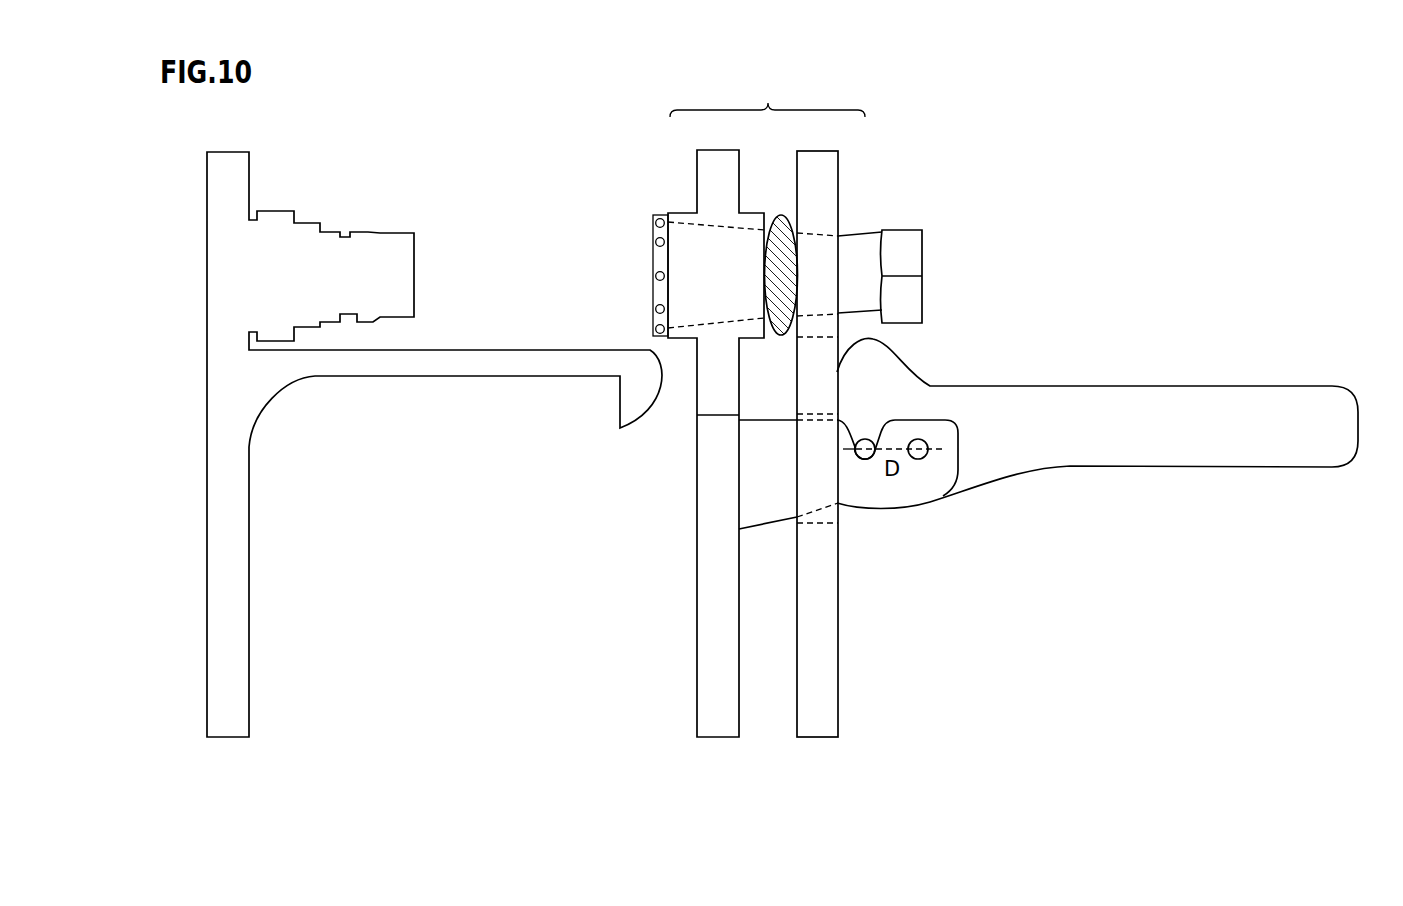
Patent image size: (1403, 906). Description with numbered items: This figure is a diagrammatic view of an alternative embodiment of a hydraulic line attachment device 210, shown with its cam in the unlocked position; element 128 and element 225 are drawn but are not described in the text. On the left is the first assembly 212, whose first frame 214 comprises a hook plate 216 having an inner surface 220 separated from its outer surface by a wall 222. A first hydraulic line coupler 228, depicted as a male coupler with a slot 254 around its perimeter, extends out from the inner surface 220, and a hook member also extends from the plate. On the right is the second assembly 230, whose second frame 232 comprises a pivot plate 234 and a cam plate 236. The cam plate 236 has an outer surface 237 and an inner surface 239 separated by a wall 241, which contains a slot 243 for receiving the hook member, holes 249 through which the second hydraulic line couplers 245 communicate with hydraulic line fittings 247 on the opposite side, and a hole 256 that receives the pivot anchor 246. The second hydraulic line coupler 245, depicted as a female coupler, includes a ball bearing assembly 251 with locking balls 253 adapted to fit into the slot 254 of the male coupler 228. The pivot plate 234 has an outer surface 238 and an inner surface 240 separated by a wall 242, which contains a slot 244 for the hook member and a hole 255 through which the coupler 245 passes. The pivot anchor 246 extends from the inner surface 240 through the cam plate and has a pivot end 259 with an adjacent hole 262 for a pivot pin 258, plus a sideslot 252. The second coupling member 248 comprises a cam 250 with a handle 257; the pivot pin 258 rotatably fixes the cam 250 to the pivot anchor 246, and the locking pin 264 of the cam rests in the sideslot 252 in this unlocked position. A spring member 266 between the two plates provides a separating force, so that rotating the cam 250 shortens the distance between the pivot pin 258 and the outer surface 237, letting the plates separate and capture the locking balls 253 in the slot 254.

The frame member 128 is at (208, 173).
The hydraulic line attachment device 210 is at (585, 182).
The first assembly 212 is at (297, 703).
The first frame 214 is at (230, 721).
The hook plate 216 is at (235, 641).
The inner surface 220 is at (249, 577).
The wall 222 is at (235, 150).
The flange 225 is at (552, 355).
The first hydraulic line couplers 228 is at (378, 240).
The second assembly 230 is at (930, 693).
The second frame 232 is at (767, 95).
The pivot plate 234 is at (714, 738).
The cam plate 236 is at (815, 740).
The outer surface 237 is at (838, 655).
The outer surface 238 is at (697, 623).
The inner surface 239 is at (796, 651).
The inner surface 240 is at (739, 671).
The wall 241 is at (822, 159).
The wall 242 is at (713, 162).
The slot 243 is at (809, 381).
The slot 244 is at (515, 390).
The second hydraulic line couplers 245 is at (683, 240).
The pivot anchor 246 is at (863, 490).
The hydraulic line fittings 247 is at (858, 247).
The second coupling member 248 is at (1008, 487).
The holes 249 is at (839, 252).
The cam 250 is at (683, 217).
The ball bearing assemblies 251 is at (655, 325).
The sideslot 252 is at (865, 428).
The locking balls 253 is at (652, 275).
The slot 254 is at (350, 235).
The hole 255 is at (763, 248).
The hole 256 is at (817, 498).
The handle 257 is at (1255, 445).
The pivot pin 258 is at (923, 443).
The pivot end 259 is at (948, 448).
The hole 262 is at (925, 453).
The locking pin 264 is at (870, 455).
The spring member 266 is at (779, 335).